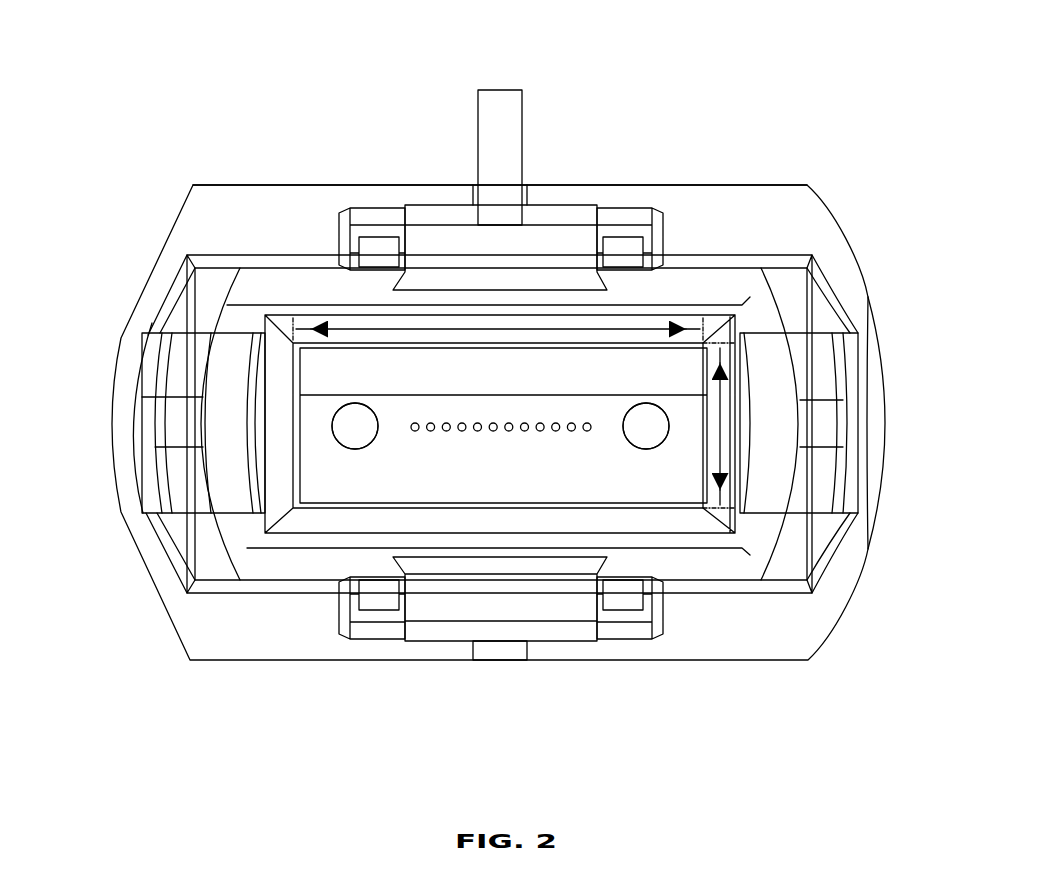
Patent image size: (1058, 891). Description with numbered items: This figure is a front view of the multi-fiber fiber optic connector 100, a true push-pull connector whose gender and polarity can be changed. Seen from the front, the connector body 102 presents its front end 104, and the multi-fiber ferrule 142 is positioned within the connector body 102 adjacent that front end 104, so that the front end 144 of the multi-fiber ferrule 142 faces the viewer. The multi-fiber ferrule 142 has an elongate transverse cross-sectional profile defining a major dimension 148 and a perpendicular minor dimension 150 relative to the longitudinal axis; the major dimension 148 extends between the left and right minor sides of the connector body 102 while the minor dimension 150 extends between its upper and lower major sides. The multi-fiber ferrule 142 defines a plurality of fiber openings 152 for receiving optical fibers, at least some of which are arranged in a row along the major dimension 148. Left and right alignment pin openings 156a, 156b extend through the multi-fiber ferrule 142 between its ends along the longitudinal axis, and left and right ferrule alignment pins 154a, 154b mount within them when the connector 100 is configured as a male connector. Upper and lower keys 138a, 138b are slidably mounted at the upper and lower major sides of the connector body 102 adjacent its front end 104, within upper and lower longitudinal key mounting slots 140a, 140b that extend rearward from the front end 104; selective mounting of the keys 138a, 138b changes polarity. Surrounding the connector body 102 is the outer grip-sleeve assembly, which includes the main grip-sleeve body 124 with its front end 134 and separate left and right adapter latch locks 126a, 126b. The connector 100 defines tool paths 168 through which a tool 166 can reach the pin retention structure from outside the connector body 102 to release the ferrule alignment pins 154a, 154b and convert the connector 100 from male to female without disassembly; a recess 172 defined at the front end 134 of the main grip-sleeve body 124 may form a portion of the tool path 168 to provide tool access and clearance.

The multi-fiber fiber optic connector 100 is at (797, 78).
The connector body 102 is at (207, 597).
The front end 104 is at (253, 292).
The main grip-sleeve body 124 is at (278, 185).
The left adapter latch lock 126a is at (868, 297).
The right adapter latch lock 126b is at (152, 325).
The front end 134 is at (165, 255).
The upper key 138a is at (433, 222).
The lower key 138b is at (445, 614).
The upper longitudinal key mounting slot 140a is at (428, 262).
The lower longitudinal key mounting slot 140b is at (418, 572).
The multi-fiber ferrule 142 is at (712, 337).
The front end 144 is at (332, 485).
The major dimension 148 is at (639, 328).
The minor dimension 150 is at (728, 472).
The fiber openings 152 is at (499, 434).
The left ferrule alignment pin 154a is at (650, 432).
The right ferrule alignment pin 154b is at (350, 428).
The left alignment pin opening 156a is at (641, 440).
The right alignment pin opening 156b is at (327, 432).
The tool 166 is at (517, 90).
The tool path 168 is at (530, 198).
The recess 172 is at (502, 665).